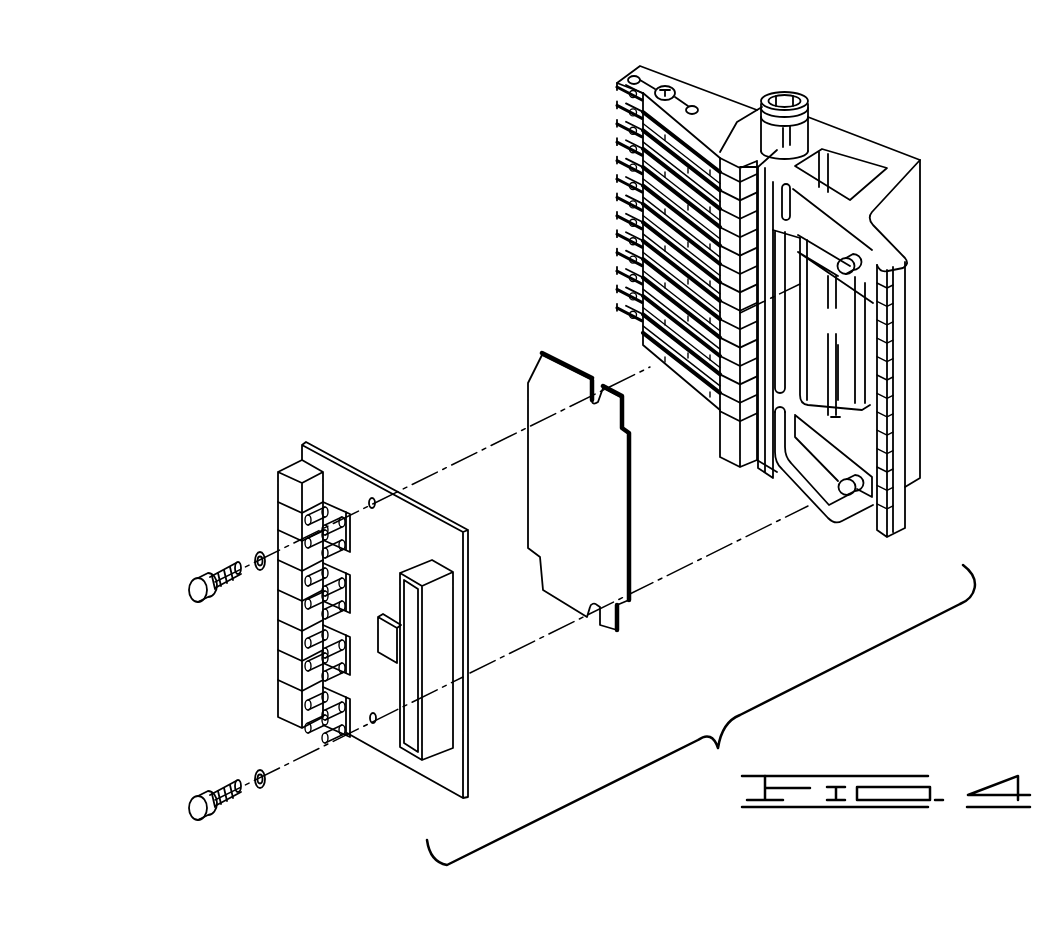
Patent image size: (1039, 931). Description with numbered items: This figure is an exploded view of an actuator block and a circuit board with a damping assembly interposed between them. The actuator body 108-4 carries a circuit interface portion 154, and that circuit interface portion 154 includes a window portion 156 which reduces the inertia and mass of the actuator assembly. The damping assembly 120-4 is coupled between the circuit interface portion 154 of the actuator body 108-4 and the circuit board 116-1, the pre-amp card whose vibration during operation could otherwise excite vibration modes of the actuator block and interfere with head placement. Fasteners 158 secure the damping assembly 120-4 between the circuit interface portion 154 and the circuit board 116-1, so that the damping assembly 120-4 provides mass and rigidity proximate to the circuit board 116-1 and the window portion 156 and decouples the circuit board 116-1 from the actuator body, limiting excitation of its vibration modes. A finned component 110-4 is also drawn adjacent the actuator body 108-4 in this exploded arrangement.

The heat sink 110-4 is at (697, 97).
The actuator body 108-4 is at (893, 174).
The damping assembly 120-4 is at (567, 394).
The circuit board 116-1 is at (385, 497).
The window portion 156 is at (839, 374).
The circuit interface portion 154 is at (836, 368).
The fasteners 158 is at (212, 580).